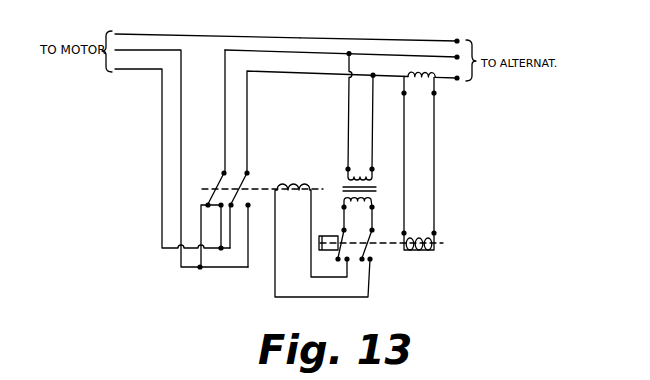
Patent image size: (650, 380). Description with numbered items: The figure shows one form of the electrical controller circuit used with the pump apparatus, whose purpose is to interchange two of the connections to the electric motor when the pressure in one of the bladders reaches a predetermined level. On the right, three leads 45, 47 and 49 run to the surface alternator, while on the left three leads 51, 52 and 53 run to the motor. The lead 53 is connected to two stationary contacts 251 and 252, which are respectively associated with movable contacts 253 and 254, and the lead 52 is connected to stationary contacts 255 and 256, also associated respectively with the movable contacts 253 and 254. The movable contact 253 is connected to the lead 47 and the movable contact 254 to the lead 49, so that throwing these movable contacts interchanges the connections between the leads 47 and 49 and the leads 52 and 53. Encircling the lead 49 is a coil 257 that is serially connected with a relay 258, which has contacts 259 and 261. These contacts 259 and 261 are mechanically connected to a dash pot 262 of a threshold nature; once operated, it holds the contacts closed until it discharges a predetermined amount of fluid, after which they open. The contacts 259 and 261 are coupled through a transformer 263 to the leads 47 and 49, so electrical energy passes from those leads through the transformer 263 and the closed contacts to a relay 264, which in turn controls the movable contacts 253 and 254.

The lead 45 is at (437, 39).
The lead 47 is at (397, 52).
The lead 49 is at (446, 79).
The lead 51 is at (157, 34).
The lead 52 is at (170, 49).
The lead 53 is at (147, 70).
The stationary contact 251 is at (208, 207).
The stationary contact 252 is at (231, 207).
The movable contact 253 is at (212, 186).
The movable contact 254 is at (249, 183).
The stationary contact 255 is at (201, 220).
The stationary contact 256 is at (249, 226).
The coil 257 is at (428, 82).
The relay 258 is at (434, 250).
The contact 259 is at (338, 262).
The contact 261 is at (378, 262).
The dash pot 262 is at (342, 215).
The transformer 263 is at (377, 189).
The relay 264 is at (306, 183).